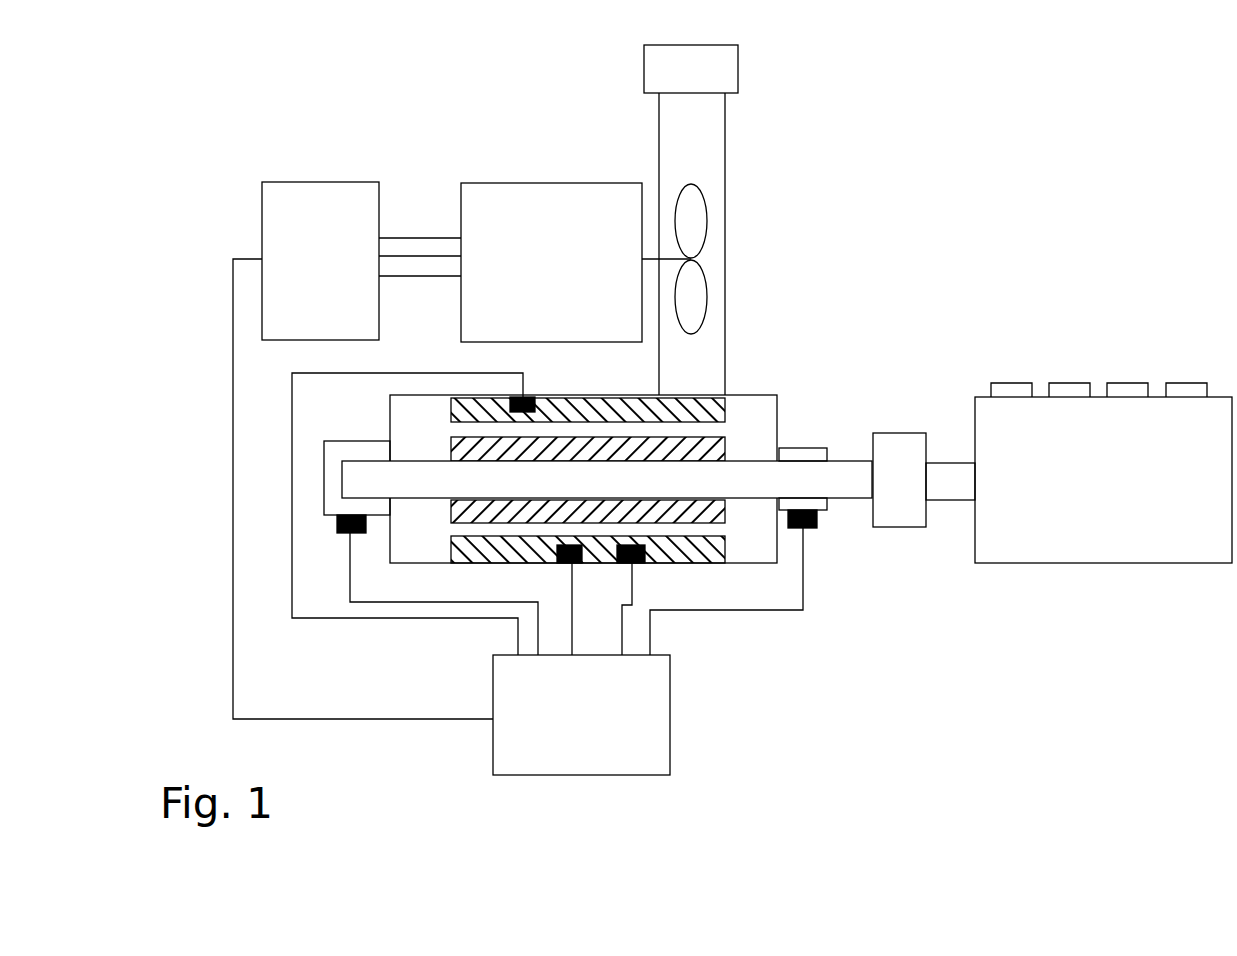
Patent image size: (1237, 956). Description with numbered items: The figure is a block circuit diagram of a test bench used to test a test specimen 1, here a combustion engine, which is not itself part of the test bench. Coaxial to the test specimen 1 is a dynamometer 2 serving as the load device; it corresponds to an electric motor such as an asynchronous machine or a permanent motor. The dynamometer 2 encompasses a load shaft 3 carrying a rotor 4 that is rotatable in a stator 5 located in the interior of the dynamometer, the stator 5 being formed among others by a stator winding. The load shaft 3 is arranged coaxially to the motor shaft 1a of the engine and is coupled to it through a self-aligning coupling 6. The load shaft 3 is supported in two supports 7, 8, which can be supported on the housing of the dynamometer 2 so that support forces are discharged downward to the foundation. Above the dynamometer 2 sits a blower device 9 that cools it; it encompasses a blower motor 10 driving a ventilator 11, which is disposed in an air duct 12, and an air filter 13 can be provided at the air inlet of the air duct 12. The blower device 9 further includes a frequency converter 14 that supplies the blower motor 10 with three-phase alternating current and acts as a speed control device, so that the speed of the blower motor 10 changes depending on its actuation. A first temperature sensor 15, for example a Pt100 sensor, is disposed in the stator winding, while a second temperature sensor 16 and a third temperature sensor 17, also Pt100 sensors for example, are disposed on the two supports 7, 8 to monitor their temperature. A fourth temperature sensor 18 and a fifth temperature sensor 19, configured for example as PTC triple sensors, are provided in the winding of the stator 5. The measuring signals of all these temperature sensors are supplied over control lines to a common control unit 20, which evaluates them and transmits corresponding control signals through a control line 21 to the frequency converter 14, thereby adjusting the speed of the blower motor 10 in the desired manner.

The test specimen 1 is at (1100, 543).
The motor shaft 1a is at (962, 487).
The dynamometer 2 is at (767, 403).
The load shaft 3 is at (747, 470).
The rotor 4 is at (727, 447).
The stator 5 is at (727, 400).
The self-aligning coupling 6 is at (899, 517).
The support 7 is at (324, 450).
The support 8 is at (803, 453).
The blower device 9 is at (846, 145).
The blower motor 10 is at (530, 195).
The ventilator 11 is at (695, 213).
The air duct 12 is at (718, 123).
The air filter 13 is at (722, 72).
The frequency converter 14 is at (305, 195).
The first temperature sensor 15 is at (562, 563).
The second temperature sensor 16 is at (337, 530).
The third temperature sensor 17 is at (812, 528).
The fourth temperature sensor 18 is at (645, 563).
The fifth temperature sensor 19 is at (527, 395).
The control unit 20 is at (658, 722).
The control line 21 is at (378, 721).